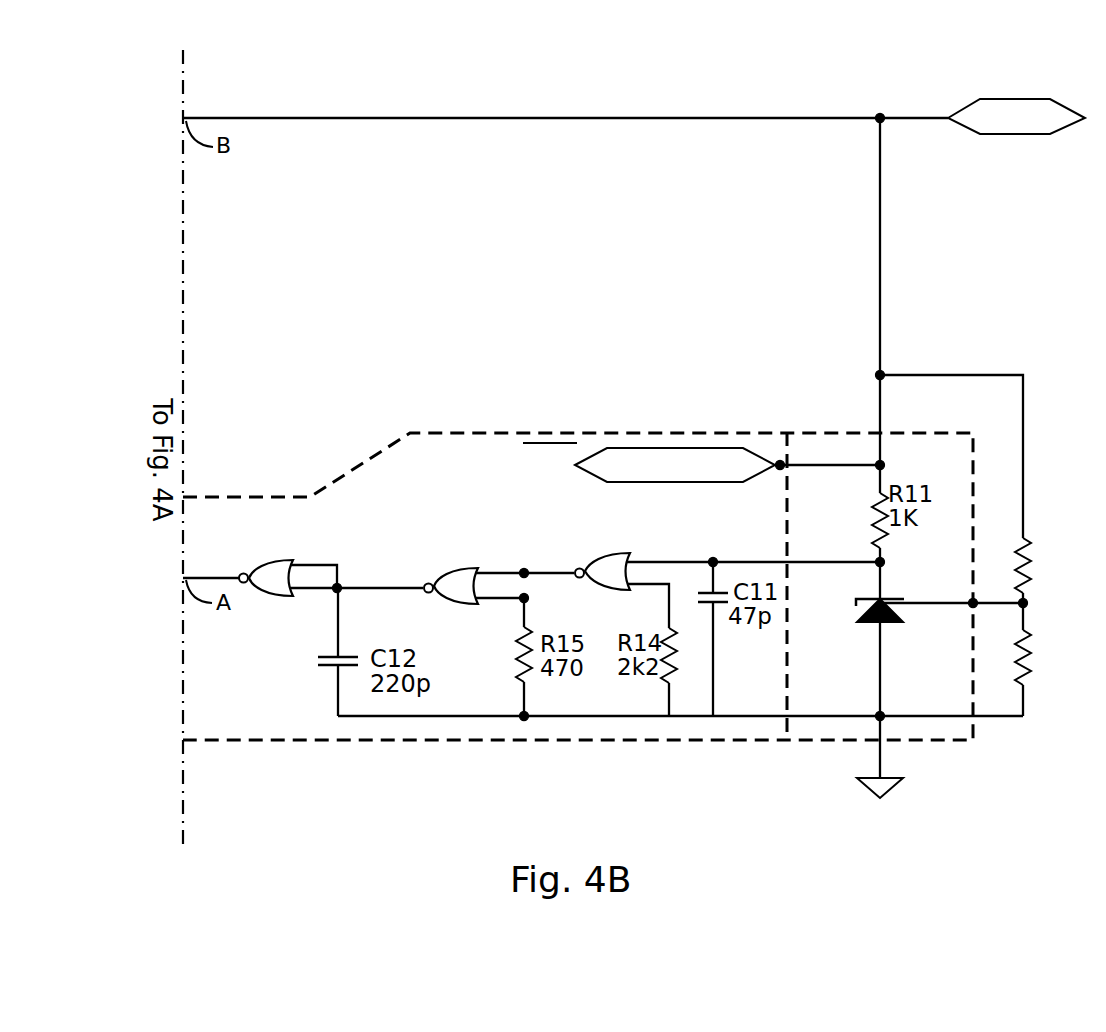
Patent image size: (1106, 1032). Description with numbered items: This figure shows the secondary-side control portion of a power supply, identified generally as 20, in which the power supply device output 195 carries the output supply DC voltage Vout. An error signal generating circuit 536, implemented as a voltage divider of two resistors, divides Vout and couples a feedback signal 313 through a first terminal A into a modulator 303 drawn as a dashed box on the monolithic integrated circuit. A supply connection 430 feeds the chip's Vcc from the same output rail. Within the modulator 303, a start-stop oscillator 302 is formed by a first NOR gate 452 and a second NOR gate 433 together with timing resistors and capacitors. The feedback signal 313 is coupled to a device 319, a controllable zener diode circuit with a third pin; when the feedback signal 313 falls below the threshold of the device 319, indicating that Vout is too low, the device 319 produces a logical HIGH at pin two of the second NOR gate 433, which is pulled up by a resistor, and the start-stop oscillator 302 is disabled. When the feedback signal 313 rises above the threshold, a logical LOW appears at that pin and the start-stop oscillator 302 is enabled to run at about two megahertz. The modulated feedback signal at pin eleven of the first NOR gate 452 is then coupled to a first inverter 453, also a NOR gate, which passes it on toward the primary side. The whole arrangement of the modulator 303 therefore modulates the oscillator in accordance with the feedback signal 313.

The power supply 20 is at (940, 68).
The power supply device output 195 is at (924, 116).
The error signal generating circuit 536 is at (968, 352).
The start-stop oscillator 302 is at (550, 448).
The supply connection 430 is at (600, 443).
The first NOR gate 452 is at (472, 570).
The first inverter 453 is at (288, 560).
The second NOR gate 433 is at (628, 556).
The feedback signal 313 is at (949, 603).
The device 319 is at (876, 621).
The modulator 303 is at (381, 777).